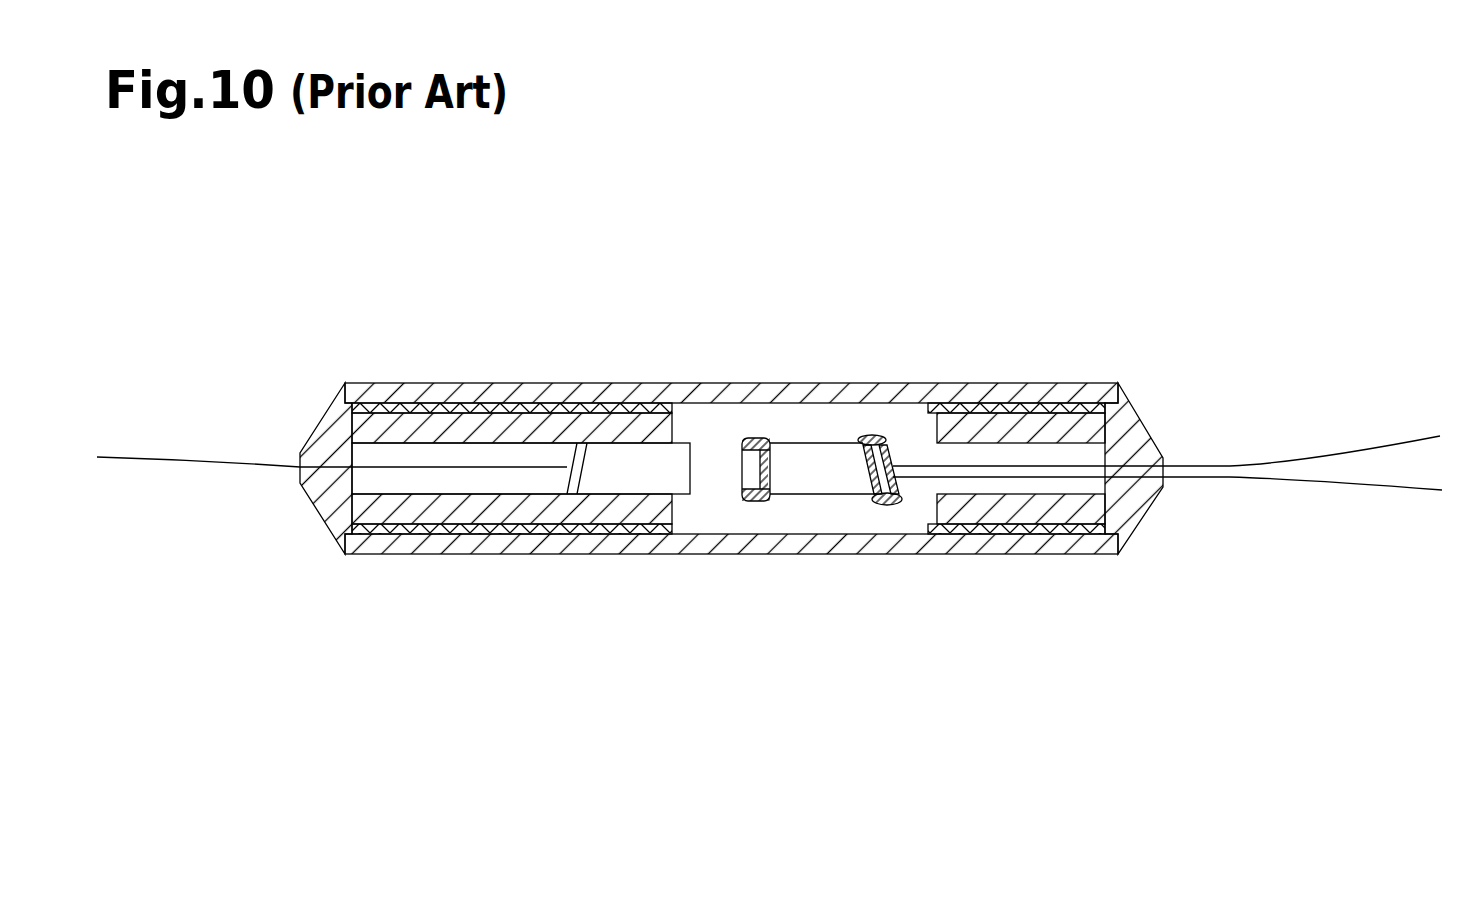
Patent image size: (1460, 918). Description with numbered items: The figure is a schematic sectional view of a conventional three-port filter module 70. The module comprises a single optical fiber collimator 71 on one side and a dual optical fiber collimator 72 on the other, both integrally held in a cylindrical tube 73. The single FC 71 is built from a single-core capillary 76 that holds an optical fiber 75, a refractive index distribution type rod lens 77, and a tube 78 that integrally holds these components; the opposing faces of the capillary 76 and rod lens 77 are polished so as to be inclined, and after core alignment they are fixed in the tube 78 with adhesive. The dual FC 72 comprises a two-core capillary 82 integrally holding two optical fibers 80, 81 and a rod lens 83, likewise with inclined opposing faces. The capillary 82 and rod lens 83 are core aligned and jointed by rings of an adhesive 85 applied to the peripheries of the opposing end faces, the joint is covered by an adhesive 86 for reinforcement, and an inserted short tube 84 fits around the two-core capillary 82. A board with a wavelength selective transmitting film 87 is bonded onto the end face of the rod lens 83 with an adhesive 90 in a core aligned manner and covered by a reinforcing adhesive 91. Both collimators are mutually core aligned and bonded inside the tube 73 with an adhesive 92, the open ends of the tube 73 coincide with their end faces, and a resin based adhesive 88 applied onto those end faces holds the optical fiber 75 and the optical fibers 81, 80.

The prior art optical collimator module 70 is at (797, 285).
The single optical fiber collimator 71 is at (345, 575).
The dual optical fiber collimator 72 is at (768, 577).
The cylindrical tube 73 is at (715, 543).
The optical fiber 75 is at (120, 453).
The single-core capillary 76 is at (443, 455).
The refractive index distribution type rod lens 77 is at (615, 458).
The tube 78 is at (537, 425).
The optical fiber 80 is at (1403, 492).
The optical fiber 81 is at (1397, 440).
The two-core capillary 82 is at (996, 450).
The refractive index distribution type rod lens 83 is at (820, 455).
The inserted short tube 84 is at (960, 435).
The adhesive 85 is at (893, 442).
The adhesive for reinforcement 86 is at (866, 436).
The wavelength selective transmitting film 87 is at (742, 475).
The resin based adhesive 88 is at (320, 425).
The adhesive 90 is at (742, 460).
The adhesive for reinforcement 91 is at (742, 438).
The adhesive 92 is at (387, 402).